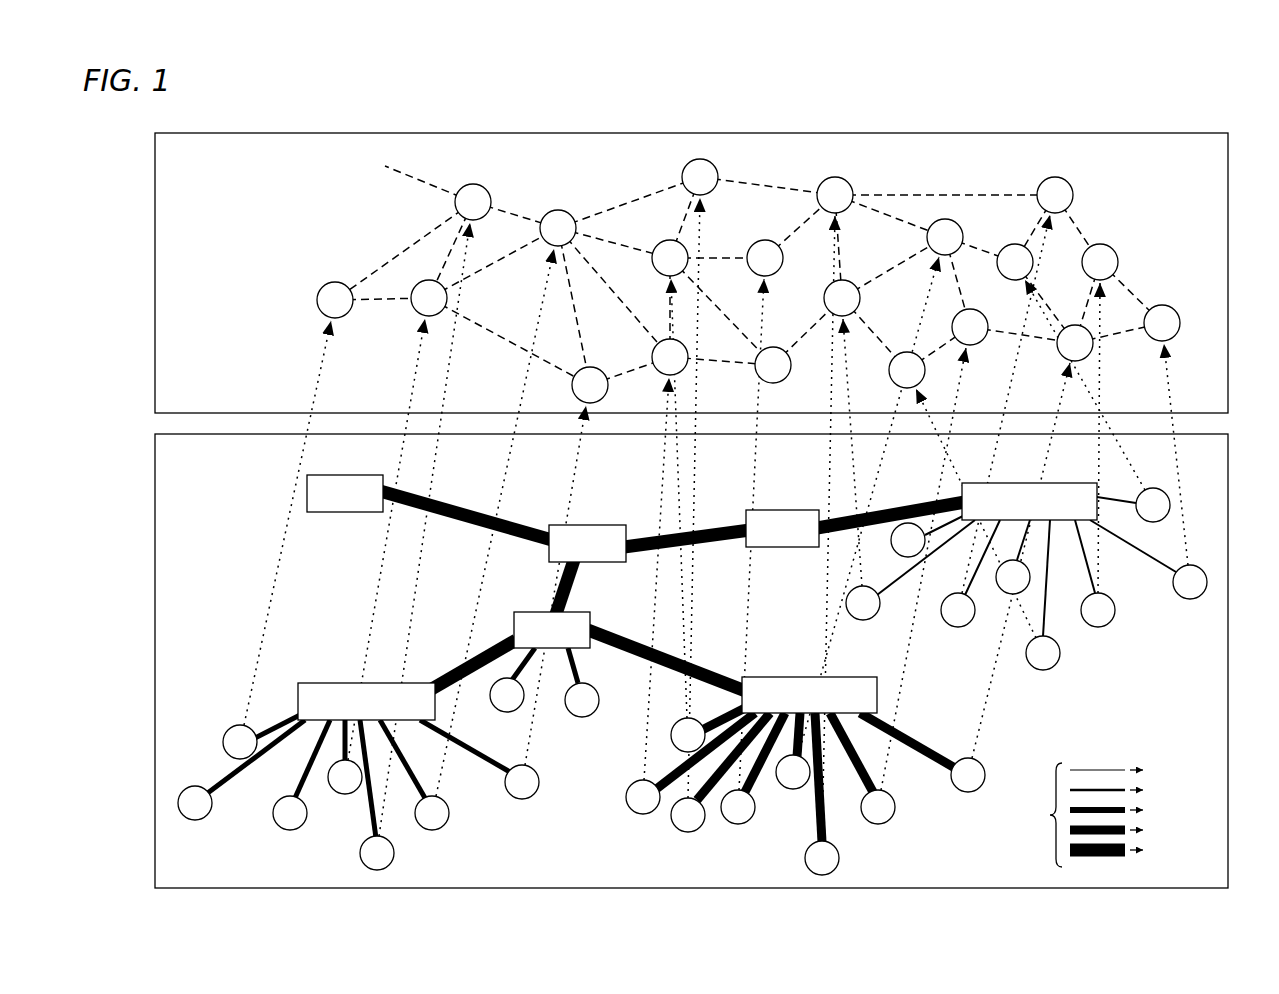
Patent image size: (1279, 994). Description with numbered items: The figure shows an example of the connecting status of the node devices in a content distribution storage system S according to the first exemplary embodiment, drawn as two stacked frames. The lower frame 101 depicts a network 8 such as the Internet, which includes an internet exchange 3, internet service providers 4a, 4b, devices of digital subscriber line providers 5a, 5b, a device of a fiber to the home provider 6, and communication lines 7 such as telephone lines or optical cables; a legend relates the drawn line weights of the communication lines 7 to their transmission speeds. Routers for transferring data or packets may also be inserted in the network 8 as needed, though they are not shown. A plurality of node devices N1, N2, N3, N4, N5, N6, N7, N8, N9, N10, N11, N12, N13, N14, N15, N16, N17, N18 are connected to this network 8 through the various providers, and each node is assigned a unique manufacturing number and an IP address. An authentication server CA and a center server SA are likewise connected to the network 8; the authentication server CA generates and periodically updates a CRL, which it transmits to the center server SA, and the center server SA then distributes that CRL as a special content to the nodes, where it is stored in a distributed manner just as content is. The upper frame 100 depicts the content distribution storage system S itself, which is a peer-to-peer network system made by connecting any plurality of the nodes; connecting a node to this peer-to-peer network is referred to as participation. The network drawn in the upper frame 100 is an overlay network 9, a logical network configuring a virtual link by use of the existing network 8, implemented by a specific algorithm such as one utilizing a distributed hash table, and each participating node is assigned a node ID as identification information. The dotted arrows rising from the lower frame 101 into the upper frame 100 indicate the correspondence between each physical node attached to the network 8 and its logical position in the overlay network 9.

The content distribution storage system S is at (676, 125).
The upper frame 100 is at (1228, 210).
The lower frame 101 is at (1228, 515).
The overlay network 9 is at (1138, 173).
The network 8 is at (714, 582).
The communication line 7 is at (604, 632).
The internet exchange 3 is at (347, 475).
The internet service provider 4a is at (532, 612).
The internet service provider 4b is at (796, 510).
The digital subscriber line provider 5a is at (1066, 483).
The digital subscriber line provider 5b is at (324, 683).
The fiber to the home provider 6 is at (806, 677).
The node device N1 is at (763, 240).
The node device N2 is at (428, 279).
The node device N3 is at (477, 184).
The node device N4 is at (561, 210).
The node device N5 is at (594, 368).
The node device N6 is at (685, 340).
The node device N7 is at (665, 239).
The node device N8 is at (202, 820).
The node device N9 is at (708, 161).
The node device N10 is at (846, 179).
The node device N11 is at (1062, 176).
The node device N12 is at (951, 219).
The node device N13 is at (1009, 244).
The node device N14 is at (1108, 244).
The node device N15 is at (854, 282).
The node device N16 is at (980, 311).
The node device N17 is at (1066, 325).
The node device N18 is at (1165, 305).
The authentication server CA is at (507, 712).
The center server SA is at (585, 717).